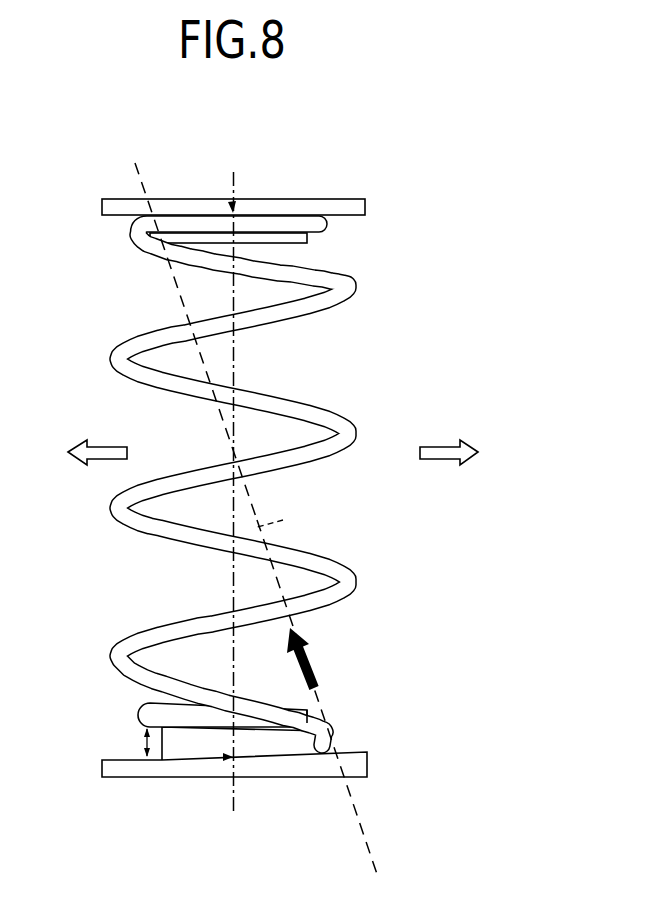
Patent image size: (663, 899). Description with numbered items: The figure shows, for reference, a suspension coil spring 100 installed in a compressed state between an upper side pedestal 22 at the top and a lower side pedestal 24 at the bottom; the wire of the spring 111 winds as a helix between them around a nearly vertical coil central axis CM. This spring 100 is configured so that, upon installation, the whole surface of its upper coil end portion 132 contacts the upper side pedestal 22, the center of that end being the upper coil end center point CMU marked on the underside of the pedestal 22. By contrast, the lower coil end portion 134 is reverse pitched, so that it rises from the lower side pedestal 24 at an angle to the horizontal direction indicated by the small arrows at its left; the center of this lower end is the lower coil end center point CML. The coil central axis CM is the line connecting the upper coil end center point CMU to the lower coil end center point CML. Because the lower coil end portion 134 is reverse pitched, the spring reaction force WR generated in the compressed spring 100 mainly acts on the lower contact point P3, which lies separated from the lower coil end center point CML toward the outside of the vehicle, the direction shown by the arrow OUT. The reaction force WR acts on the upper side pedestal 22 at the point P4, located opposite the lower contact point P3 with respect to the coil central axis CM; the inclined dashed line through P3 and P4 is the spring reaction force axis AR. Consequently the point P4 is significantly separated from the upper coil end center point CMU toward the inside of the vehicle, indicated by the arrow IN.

The upper side pedestal 22 is at (329, 192).
The upper coil end portion 132 is at (285, 222).
The suspension coil spring 100 is at (315, 484).
The coil spring 111 is at (362, 437).
The lower side pedestal 24 is at (170, 783).
The lower coil end portion 134 is at (267, 737).
The lower contact point P3 is at (326, 757).
The point P4 is at (140, 203).
The coil central axis CM is at (240, 364).
The upper coil end center point CMU is at (230, 203).
The lower coil end center point CML is at (222, 756).
The spring reaction force axis AR is at (283, 520).
The spring reaction force WR is at (312, 672).
The arrow IN is at (81, 452).
The vehicle outward direction OUT is at (480, 452).